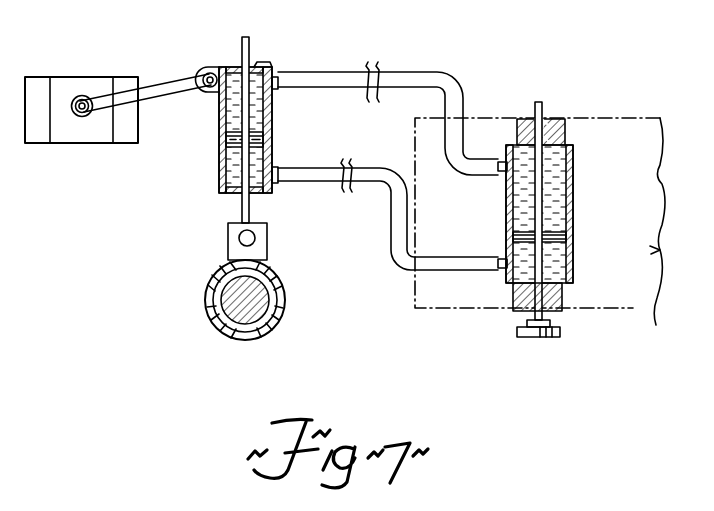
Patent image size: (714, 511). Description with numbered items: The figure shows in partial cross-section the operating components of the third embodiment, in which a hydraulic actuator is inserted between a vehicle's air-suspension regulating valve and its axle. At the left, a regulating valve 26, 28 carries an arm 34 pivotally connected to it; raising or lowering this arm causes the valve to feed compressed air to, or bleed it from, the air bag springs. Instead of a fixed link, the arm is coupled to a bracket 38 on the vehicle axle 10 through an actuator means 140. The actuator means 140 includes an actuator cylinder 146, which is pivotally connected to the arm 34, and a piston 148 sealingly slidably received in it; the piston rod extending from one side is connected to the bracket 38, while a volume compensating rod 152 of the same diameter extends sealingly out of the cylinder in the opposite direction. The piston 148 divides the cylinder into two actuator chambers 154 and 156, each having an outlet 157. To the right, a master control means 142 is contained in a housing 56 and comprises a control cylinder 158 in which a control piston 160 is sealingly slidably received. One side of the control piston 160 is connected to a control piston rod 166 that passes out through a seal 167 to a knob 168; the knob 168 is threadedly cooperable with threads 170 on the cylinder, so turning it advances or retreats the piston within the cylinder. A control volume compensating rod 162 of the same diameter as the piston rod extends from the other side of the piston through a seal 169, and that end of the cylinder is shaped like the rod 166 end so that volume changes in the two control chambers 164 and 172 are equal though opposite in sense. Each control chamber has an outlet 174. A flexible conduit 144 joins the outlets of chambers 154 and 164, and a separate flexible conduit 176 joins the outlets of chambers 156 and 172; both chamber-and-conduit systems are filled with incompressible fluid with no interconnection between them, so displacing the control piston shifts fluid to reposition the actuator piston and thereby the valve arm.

The vehicle axle 10 is at (203, 302).
The regulating valve 26 is at (77, 136).
The regulating valve 28 is at (62, 143).
The arm 34 is at (158, 80).
The bracket 38 is at (267, 250).
The housing 56 is at (645, 96).
The actuator means 140 is at (225, 115).
The master control means 142 is at (412, 307).
The flexible conduit 144 is at (432, 71).
The actuator cylinder 146 is at (270, 138).
The piston 148 is at (222, 153).
The volume compensating rod 152 is at (249, 42).
The actuator chamber 154 is at (209, 72).
The actuator chamber 156 is at (222, 190).
The outlet 157 is at (277, 90).
The control cylinder 158 is at (560, 166).
The control piston 160 is at (574, 238).
The control volume compensating rod 162 is at (543, 110).
The control chamber 164 is at (574, 158).
The control piston rod 166 is at (550, 262).
The seal 167 is at (565, 290).
The knob 168 is at (540, 333).
The seal 169 is at (566, 125).
The threads 170 is at (553, 313).
The control chamber 172 is at (515, 250).
The outlet 174 is at (505, 158).
The flexible conduit 176 is at (387, 182).